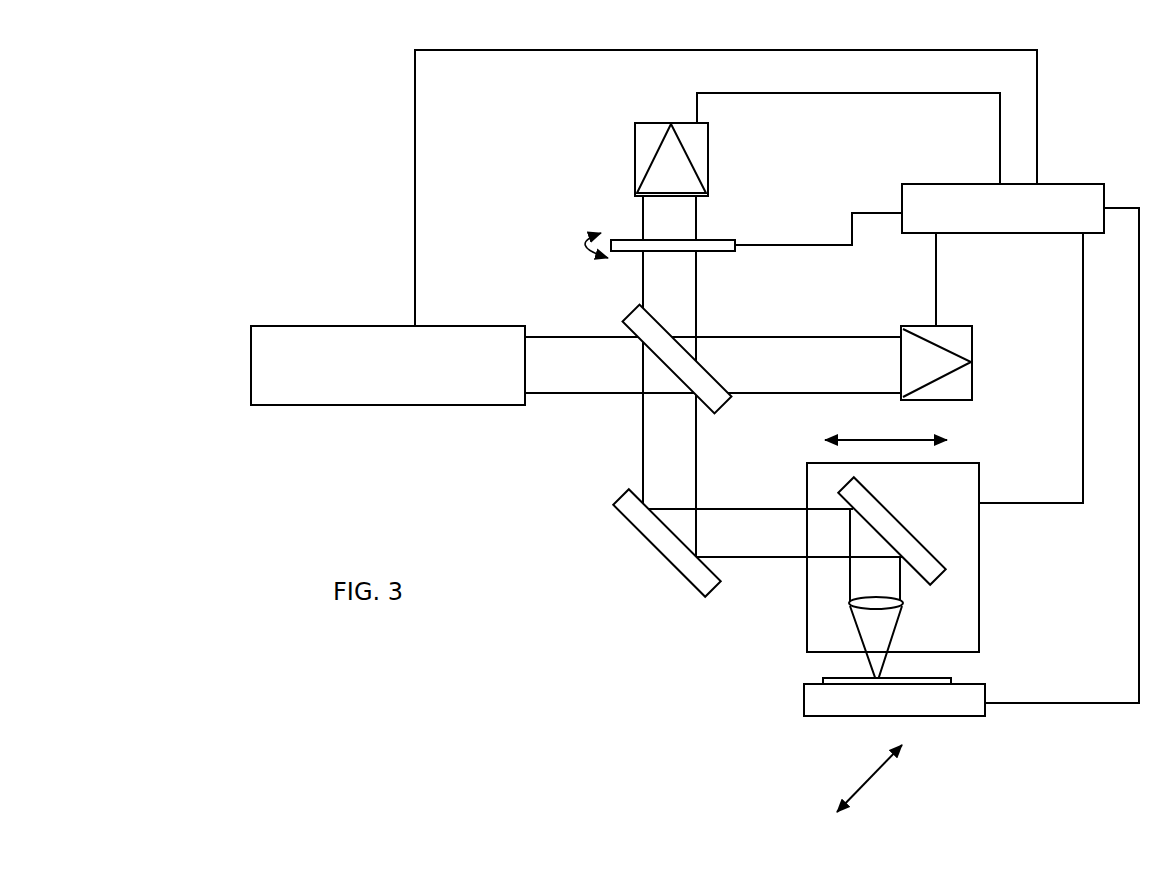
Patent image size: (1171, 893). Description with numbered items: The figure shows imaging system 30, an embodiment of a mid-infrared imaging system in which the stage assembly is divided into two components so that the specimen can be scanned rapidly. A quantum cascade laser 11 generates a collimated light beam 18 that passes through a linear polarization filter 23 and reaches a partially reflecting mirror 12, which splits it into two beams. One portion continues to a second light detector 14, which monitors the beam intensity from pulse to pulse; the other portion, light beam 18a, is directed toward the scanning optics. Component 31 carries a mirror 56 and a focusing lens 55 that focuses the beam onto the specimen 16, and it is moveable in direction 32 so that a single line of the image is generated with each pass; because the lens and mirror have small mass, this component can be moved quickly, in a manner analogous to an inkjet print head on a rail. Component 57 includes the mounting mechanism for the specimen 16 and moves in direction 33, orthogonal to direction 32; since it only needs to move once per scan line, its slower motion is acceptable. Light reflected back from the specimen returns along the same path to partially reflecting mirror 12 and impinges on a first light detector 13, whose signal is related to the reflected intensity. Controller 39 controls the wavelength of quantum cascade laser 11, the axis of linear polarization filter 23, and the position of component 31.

The imaging system 30 is at (288, 117).
The quantum cascade laser 11 is at (386, 405).
The partially reflecting mirror 12 is at (717, 403).
The first light detector 13 is at (708, 146).
The second light detector 14 is at (972, 386).
The collimated light beam 18 is at (570, 340).
The light beam 18a is at (647, 448).
The linear polarization filter 23 is at (723, 239).
The controller 39 is at (997, 233).
The direction of movement 32 is at (877, 433).
The component 31 is at (979, 560).
The mirror 56 is at (876, 507).
The focusing lens 55 is at (903, 604).
The specimen 16 is at (830, 680).
The component 57 is at (803, 697).
The direction of movement 33 is at (870, 780).